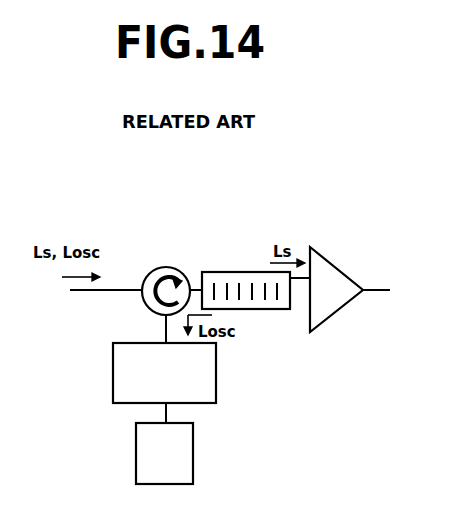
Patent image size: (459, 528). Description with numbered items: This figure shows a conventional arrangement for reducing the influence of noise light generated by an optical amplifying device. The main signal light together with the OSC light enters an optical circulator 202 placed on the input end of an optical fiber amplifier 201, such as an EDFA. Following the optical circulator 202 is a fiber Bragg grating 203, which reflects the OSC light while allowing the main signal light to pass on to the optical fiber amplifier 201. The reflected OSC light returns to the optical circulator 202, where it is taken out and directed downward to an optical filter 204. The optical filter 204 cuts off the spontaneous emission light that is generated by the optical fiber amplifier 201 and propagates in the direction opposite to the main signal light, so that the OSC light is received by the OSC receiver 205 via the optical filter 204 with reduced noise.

The optical fiber amplifier 201 is at (337, 270).
The optical circulator 202 is at (166, 268).
The fiber Bragg grating 203 is at (245, 272).
The optical filter 204 is at (113, 364).
The OSC receiver 205 is at (136, 447).